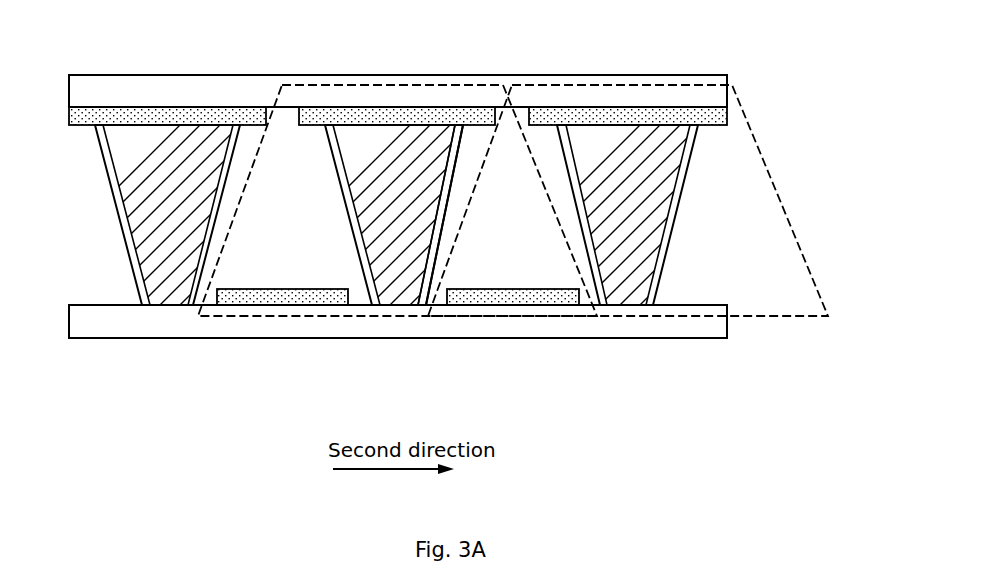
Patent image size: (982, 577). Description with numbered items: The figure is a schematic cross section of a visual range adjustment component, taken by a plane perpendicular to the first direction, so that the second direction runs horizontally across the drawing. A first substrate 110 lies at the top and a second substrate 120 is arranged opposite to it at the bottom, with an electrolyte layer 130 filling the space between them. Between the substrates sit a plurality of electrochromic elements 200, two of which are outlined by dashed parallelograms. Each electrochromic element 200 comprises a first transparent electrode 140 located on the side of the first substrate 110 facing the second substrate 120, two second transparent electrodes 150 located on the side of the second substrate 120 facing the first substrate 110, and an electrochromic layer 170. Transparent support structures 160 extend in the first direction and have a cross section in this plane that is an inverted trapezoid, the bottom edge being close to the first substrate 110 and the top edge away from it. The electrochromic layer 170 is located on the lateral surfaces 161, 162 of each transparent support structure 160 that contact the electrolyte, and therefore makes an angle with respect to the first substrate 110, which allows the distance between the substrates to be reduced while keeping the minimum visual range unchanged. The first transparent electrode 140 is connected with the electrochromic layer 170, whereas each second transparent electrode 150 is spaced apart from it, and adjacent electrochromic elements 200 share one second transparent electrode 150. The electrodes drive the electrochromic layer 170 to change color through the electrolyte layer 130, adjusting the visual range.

The first substrate 110 is at (398, 65).
The second substrate 120 is at (398, 356).
The electrolyte layer 130 is at (326, 161).
The first transparent electrode 140 is at (398, 74).
The second transparent electrode 150 is at (408, 348).
The transparent support structure 160 is at (420, 266).
The lateral surface 161 is at (396, 266).
The lateral surface 162 is at (420, 266).
The electrochromic layer 170 is at (496, 164).
The electrochromic element 200 is at (513, 169).